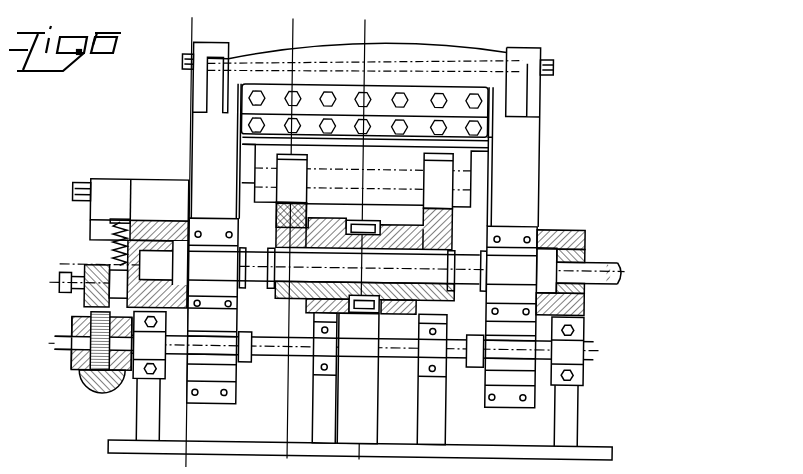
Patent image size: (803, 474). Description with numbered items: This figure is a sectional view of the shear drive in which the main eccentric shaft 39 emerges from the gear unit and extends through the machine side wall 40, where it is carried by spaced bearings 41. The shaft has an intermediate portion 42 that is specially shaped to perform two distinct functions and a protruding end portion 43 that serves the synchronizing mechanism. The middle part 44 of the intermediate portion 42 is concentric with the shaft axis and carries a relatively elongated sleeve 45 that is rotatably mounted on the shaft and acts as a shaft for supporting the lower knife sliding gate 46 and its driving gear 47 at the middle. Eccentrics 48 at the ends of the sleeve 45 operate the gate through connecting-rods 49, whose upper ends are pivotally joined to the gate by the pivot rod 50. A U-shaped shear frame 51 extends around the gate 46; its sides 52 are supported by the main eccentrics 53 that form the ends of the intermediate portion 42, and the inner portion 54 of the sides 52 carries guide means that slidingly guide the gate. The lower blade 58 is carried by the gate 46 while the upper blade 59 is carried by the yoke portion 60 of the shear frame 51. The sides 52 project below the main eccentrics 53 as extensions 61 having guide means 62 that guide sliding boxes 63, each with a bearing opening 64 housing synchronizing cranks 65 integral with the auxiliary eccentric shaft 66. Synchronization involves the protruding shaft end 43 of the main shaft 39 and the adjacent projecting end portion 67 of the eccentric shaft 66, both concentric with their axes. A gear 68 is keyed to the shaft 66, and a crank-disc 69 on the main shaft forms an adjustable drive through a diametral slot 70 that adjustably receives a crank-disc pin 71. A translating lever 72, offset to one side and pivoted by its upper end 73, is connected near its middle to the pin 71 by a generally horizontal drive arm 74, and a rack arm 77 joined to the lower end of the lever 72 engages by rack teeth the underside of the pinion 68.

The main eccentric shaft 39 is at (610, 262).
The machine side wall 40 is at (588, 240).
The spaced bearings 41 is at (587, 316).
The intermediate portion 42 is at (275, 292).
The protruding end portion 43 is at (185, 215).
The middle part 44 is at (285, 306).
The sleeve 45 is at (408, 313).
The lower knife sliding gate 46 is at (480, 201).
The gear 47 is at (390, 234).
The eccentrics 48 is at (442, 241).
The connecting-rods 49 is at (452, 224).
The pivot rod 50 is at (455, 165).
The shear frame 51 is at (540, 117).
The sides 52 is at (193, 121).
The main eccentrics 53 is at (214, 237).
The inner portion 54 is at (238, 152).
The lower blade 58 is at (478, 116).
The upper blade 59 is at (465, 86).
The yoke portion 60 is at (428, 53).
The extensions 61 is at (211, 398).
The guide means 62 is at (222, 376).
The sliding boxes 63 is at (238, 361).
The bearing opening 64 is at (255, 348).
The cranks 65 is at (195, 357).
The auxiliary eccentric shaft 66 is at (443, 363).
The projecting end portion 67 is at (75, 347).
The gear 68 is at (88, 376).
The crank-disc 69 is at (118, 222).
The diametral slot 70 is at (118, 232).
The crank-disc pin 71 is at (112, 278).
The translating lever 72 is at (90, 219).
The upper end 73 is at (130, 181).
The drive arm 74 is at (86, 270).
The rack arm 77 is at (100, 396).